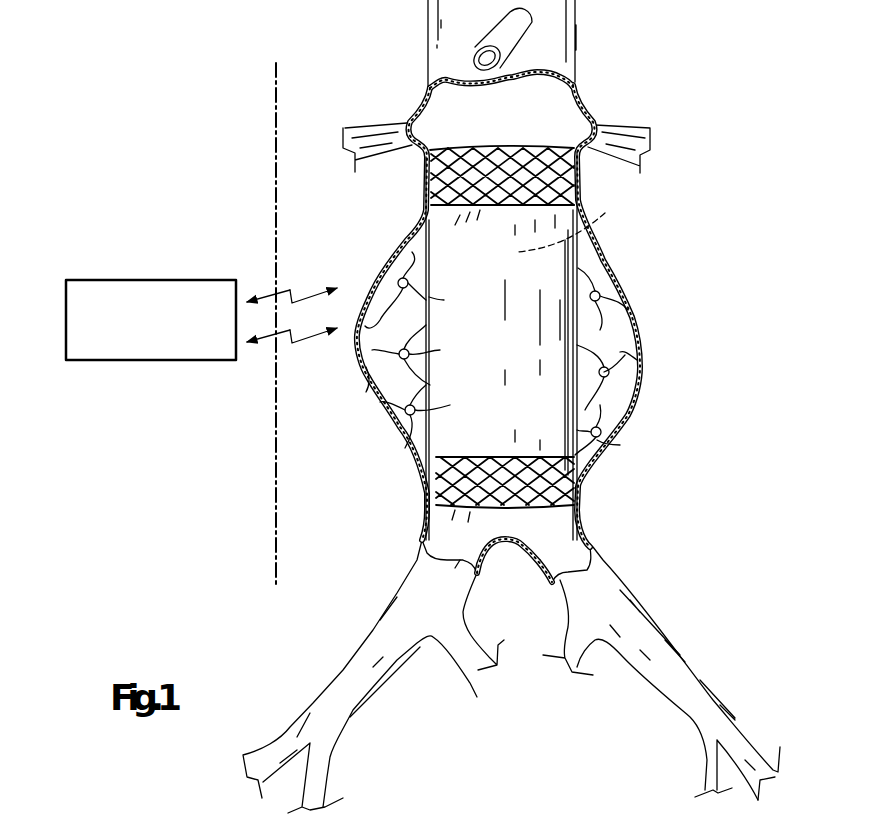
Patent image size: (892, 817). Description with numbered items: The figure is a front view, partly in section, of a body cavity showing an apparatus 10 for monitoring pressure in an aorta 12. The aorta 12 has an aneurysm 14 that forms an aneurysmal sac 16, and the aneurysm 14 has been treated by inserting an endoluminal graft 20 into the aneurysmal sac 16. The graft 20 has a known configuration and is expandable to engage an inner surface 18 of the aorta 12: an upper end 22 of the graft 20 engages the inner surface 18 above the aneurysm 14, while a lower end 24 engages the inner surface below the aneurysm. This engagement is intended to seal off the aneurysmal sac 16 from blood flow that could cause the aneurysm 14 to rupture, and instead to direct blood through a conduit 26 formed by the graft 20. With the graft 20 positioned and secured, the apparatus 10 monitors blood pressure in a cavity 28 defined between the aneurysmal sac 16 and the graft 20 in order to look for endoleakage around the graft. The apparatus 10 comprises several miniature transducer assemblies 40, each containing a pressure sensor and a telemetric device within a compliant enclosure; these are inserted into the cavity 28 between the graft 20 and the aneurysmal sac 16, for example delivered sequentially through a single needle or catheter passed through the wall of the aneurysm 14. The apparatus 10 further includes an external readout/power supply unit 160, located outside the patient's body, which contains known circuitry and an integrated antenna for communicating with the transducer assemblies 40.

The apparatus 10 is at (648, 210).
The aorta 12 is at (578, 42).
The aneurysm 14 is at (640, 402).
The aneurysmal sac 16 is at (640, 360).
The inner surface 18 is at (600, 442).
The endoluminal graft 20 is at (420, 235).
The upper end 22 is at (440, 178).
The lower end 24 is at (430, 488).
The conduit 26 is at (574, 223).
The cavity 28 is at (366, 367).
The transducer assembly 40 is at (403, 283).
The readout/power supply unit 160 is at (163, 278).